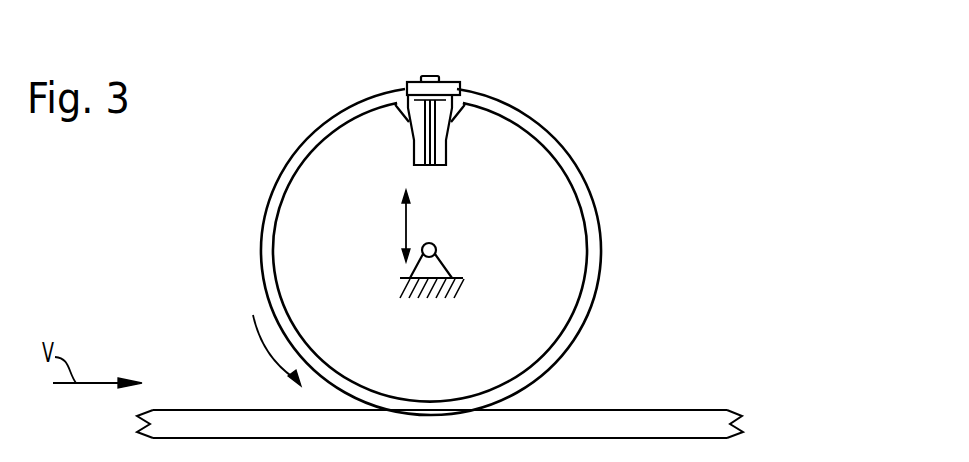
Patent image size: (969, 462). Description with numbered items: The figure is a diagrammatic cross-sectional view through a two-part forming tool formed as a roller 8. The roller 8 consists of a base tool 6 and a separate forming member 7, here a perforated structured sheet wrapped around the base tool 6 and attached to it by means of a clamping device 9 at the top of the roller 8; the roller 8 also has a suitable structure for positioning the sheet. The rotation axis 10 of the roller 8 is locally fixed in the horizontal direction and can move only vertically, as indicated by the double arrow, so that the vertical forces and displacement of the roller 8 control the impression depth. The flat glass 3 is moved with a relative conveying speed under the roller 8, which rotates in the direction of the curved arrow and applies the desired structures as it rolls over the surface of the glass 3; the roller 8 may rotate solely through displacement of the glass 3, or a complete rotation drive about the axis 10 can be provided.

The glass 3 is at (606, 421).
The base tool 6 is at (465, 239).
The forming member 7 is at (594, 287).
The roller 8 is at (311, 114).
The clamping device 9 is at (440, 93).
The rotation axis 10 is at (436, 246).